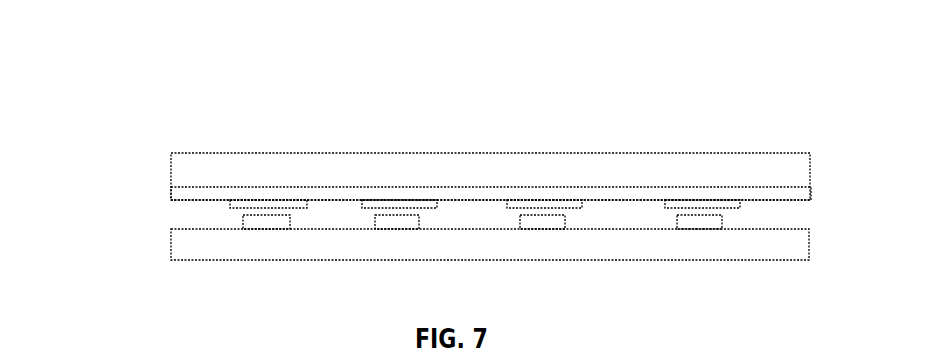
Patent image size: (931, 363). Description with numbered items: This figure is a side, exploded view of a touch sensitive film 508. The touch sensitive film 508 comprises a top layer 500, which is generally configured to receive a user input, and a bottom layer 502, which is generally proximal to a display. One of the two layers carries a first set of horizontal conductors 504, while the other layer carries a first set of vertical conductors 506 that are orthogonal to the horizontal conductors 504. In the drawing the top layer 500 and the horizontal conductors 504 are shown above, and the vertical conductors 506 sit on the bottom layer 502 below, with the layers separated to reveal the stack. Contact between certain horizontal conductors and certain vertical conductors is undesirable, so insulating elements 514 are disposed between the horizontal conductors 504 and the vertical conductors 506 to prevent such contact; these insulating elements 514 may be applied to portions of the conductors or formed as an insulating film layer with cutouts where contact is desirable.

The top layer 500 is at (182, 165).
The bottom layer 502 is at (177, 245).
The first set of horizontal conductors 504 is at (803, 194).
The first set of vertical conductors 506 is at (705, 225).
The touch sensitive film 508 is at (453, 165).
The insulating elements 514 is at (514, 204).